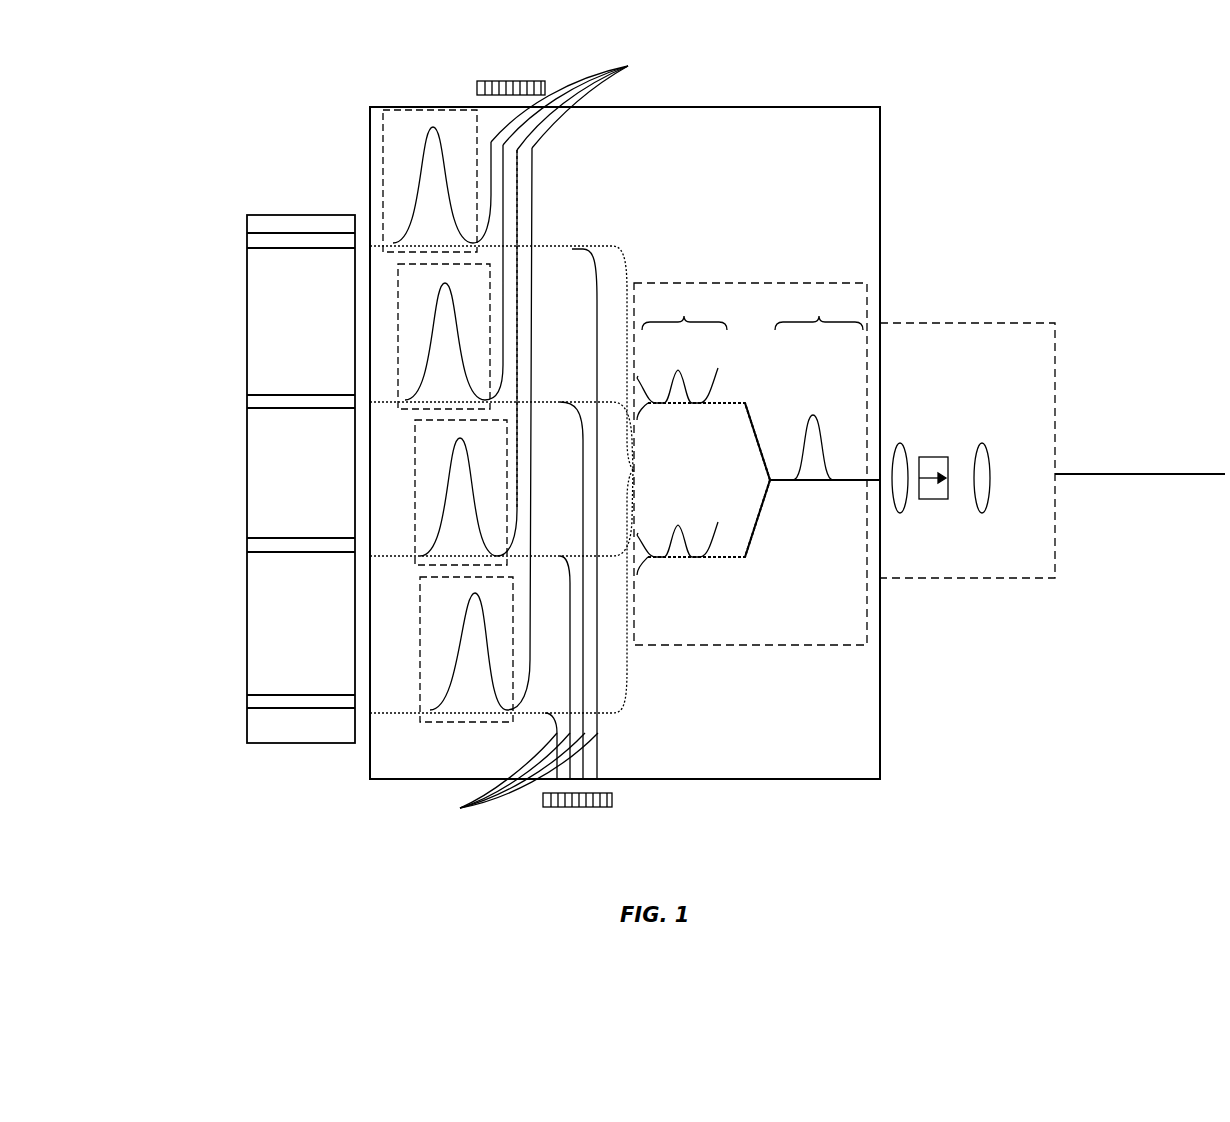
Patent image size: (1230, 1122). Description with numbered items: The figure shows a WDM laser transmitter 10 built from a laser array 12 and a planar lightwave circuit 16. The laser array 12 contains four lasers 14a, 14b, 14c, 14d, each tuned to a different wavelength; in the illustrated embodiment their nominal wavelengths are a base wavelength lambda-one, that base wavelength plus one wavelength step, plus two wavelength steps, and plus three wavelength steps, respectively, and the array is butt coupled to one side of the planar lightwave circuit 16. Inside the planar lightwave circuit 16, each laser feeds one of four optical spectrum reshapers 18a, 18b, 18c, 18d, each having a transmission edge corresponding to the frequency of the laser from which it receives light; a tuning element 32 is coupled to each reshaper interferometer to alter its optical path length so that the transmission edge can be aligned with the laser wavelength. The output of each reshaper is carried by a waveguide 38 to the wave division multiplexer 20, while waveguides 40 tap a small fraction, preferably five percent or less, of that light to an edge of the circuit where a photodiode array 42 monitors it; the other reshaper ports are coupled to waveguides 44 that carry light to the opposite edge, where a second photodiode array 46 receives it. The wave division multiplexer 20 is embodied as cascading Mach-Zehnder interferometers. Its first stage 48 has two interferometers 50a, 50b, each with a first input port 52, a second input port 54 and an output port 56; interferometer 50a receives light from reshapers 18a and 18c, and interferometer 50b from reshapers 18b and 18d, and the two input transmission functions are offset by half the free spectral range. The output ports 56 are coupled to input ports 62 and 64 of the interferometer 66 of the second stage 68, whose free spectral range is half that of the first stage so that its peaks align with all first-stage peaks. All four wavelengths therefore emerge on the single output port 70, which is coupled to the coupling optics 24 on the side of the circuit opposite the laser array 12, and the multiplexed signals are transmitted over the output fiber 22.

The laser transmitter 10 is at (998, 184).
The laser array 12 is at (247, 421).
The laser 14a is at (302, 247).
The laser 14b is at (282, 402).
The laser 14c is at (282, 545).
The laser 14d is at (282, 700).
The planar lightwave circuit 16 is at (814, 175).
The optical spectrum reshaper 18a is at (422, 174).
The optical spectrum reshaper 18b is at (429, 338).
The optical spectrum reshaper 18c is at (444, 494).
The optical spectrum reshaper 18d is at (452, 651).
The wave division multiplexer 20 is at (742, 283).
The output fiber 22 is at (1135, 474).
The coupling optics 24 is at (968, 323).
The tuning element 32 is at (383, 137).
The waveguide 38 is at (557, 246).
The waveguides 40 is at (460, 808).
The photodiode array 42 is at (615, 800).
The waveguides 44 is at (628, 66).
The photodiode array 46 is at (477, 88).
The first stage 48 is at (684, 311).
The interferometer 50a is at (691, 374).
The interferometer 50b is at (691, 532).
The first input port 52 is at (640, 378).
The second input port 54 is at (642, 412).
The output port 56 is at (735, 398).
The input port 62 is at (760, 425).
The input port 64 is at (758, 512).
The interferometer 66 is at (814, 413).
The second stage 68 is at (819, 311).
The output port 70 is at (860, 482).